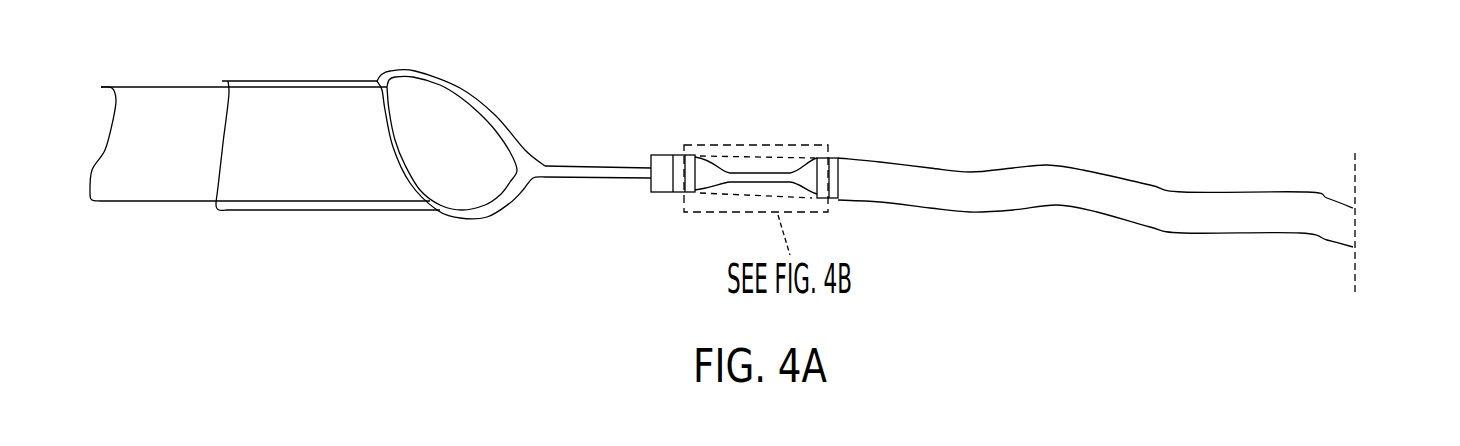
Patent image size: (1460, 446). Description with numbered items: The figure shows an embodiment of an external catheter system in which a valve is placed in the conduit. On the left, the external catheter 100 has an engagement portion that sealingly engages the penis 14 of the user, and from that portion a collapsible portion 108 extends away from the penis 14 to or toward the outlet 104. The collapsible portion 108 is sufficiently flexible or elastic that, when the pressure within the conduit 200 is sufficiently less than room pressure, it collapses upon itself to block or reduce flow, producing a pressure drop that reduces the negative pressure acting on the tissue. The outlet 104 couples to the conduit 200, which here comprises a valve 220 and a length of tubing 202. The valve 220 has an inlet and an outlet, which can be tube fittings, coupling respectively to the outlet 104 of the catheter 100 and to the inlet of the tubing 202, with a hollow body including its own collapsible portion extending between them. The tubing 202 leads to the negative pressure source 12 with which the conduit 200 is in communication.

The negative pressure source 12 is at (1392, 218).
The penis 14 is at (177, 193).
The external catheter 100 is at (500, 122).
The outlet 104 is at (655, 172).
The collapsible portion 108 is at (582, 178).
The conduit 200 is at (1085, 160).
The tubing 202 is at (1010, 197).
The valve 220 is at (750, 108).